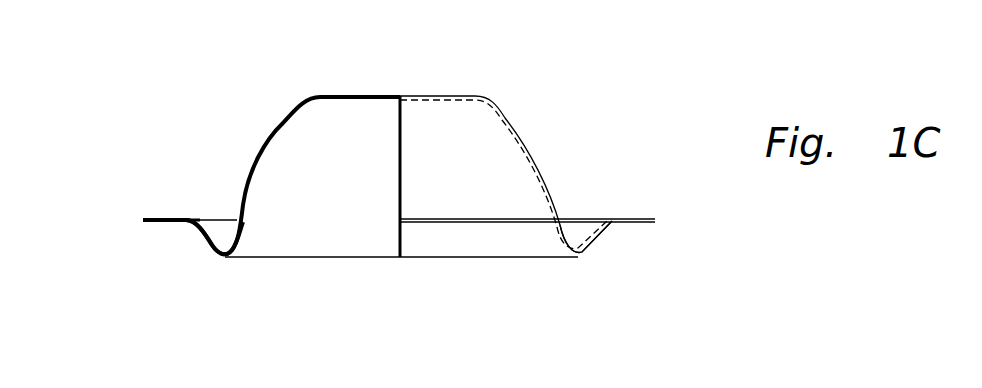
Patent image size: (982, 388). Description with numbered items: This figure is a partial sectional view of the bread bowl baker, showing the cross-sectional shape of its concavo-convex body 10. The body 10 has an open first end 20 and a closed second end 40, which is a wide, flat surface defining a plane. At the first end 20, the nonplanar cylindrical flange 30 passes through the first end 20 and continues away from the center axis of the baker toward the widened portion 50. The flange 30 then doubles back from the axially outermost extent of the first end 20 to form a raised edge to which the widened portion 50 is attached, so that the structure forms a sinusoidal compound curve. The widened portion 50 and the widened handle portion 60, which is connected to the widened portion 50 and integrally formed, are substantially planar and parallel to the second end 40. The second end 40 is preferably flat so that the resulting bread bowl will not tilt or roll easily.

The concavo-convex body 10 is at (293, 115).
The first end 20 is at (578, 258).
The nonplanar cylindrical flange 30 is at (203, 235).
The second end 40 is at (417, 93).
The widened portion 50 is at (183, 220).
The widened handle portion 60 is at (152, 217).